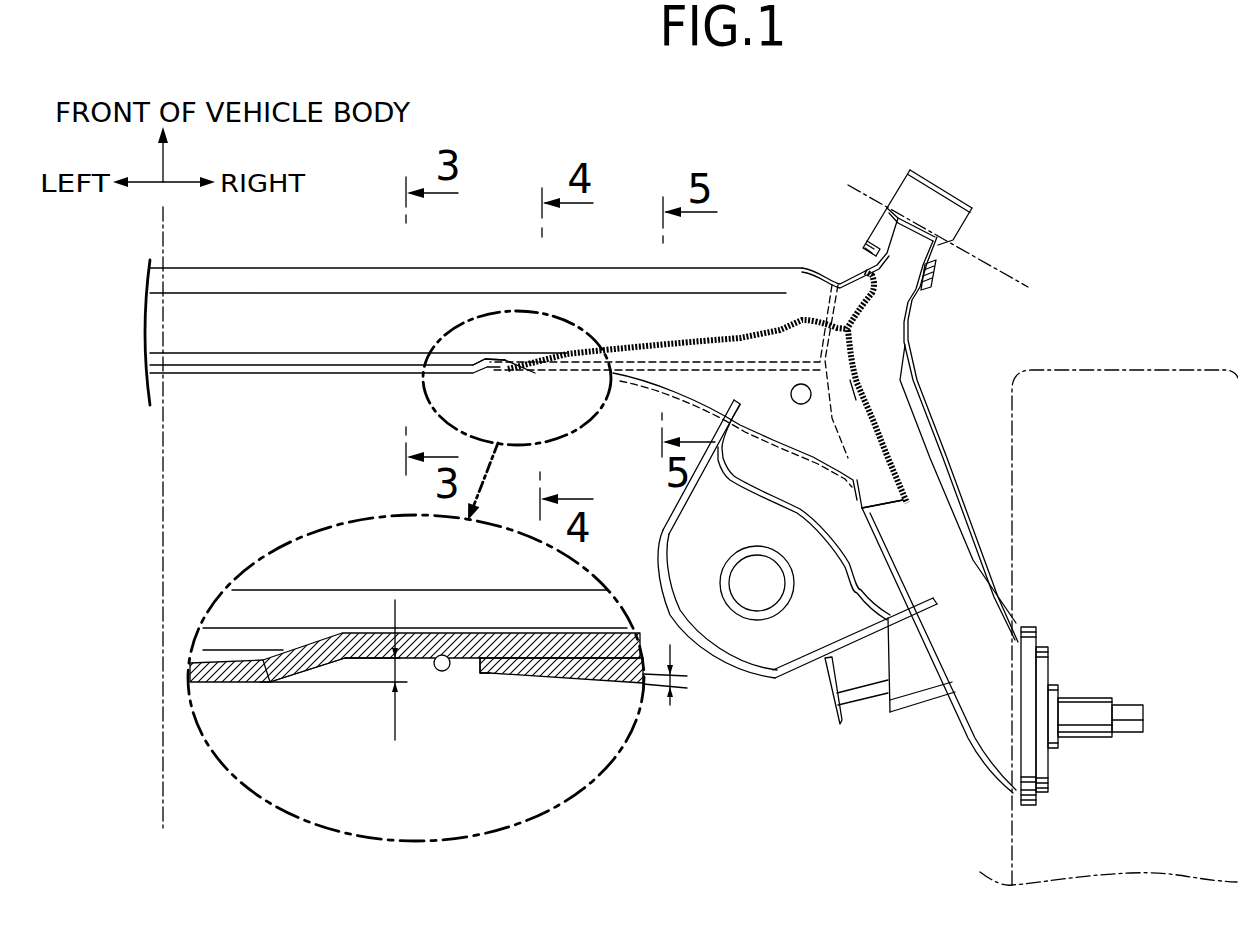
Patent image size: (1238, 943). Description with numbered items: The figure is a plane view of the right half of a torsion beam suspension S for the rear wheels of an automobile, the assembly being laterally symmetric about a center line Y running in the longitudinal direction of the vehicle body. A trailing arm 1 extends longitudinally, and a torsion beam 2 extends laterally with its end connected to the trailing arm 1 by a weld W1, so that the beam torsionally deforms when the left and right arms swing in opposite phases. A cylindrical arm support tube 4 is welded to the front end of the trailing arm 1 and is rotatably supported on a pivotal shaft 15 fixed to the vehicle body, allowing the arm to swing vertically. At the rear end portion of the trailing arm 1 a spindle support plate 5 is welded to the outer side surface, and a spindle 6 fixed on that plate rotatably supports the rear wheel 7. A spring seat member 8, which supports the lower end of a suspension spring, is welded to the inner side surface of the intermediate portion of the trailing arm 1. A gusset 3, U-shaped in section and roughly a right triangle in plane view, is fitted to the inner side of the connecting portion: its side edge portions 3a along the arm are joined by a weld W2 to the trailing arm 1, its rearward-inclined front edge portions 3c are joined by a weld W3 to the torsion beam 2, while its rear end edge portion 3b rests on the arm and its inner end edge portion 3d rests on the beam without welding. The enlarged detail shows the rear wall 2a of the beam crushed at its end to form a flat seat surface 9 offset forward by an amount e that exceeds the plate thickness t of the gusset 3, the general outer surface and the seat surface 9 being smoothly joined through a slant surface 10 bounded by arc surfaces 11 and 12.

The trailing arm 1 is at (945, 522).
The torsion beam 2 is at (297, 312).
The rear wall 2a is at (350, 373).
The gusset 3 is at (765, 385).
The side edge portion 3a is at (883, 473).
The rear end edge portion 3b is at (883, 497).
The front edge portion 3c is at (638, 357).
The inner end edge portion 3d is at (535, 373).
The arm support tube 4 is at (935, 195).
The spindle support plate 5 is at (1028, 625).
The spindle 6 is at (1080, 703).
The rear wheel 7 is at (1112, 370).
The spring seat member 8 is at (775, 647).
The seat surface 9 is at (442, 655).
The slant surface 10 is at (310, 667).
The arc surface 11 is at (263, 683).
The arc surface 12 is at (345, 660).
The pivotal shaft 15 is at (1000, 267).
The weld W1 is at (862, 312).
The weld W2 is at (882, 430).
The weld W3 is at (708, 343).
The torsion beam suspension S is at (346, 240).
The center line Y is at (163, 488).
The forward offset amount e is at (397, 668).
The plate thickness t is at (672, 690).